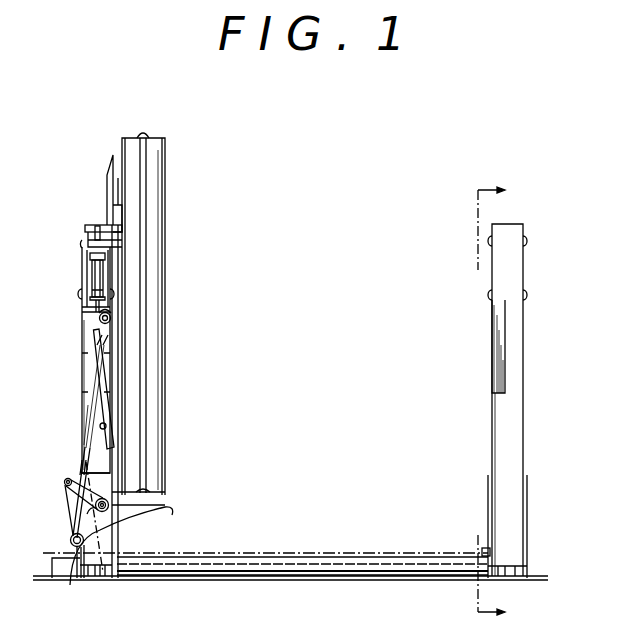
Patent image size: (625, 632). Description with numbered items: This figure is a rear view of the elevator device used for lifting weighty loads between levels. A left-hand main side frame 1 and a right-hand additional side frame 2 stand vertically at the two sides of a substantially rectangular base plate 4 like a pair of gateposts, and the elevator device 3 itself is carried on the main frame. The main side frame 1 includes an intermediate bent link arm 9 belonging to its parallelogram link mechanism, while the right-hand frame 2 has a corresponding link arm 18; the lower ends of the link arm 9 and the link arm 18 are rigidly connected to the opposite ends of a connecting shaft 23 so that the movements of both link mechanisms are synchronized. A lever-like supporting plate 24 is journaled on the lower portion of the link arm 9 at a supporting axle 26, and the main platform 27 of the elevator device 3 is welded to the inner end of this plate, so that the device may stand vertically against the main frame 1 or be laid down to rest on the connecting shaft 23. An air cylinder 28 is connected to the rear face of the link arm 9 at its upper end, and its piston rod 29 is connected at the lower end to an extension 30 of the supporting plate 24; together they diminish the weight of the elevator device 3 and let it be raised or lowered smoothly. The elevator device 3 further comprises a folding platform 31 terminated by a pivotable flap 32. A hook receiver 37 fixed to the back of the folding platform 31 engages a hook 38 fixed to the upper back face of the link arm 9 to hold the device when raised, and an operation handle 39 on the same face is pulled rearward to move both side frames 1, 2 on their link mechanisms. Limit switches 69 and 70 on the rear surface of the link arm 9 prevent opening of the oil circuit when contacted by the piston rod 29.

The main side frame 1 is at (80, 318).
The additional side frame 2 is at (527, 352).
The elevator device 3 is at (168, 285).
The base plate 4 is at (142, 582).
The intermediate bent link arm 9 is at (84, 338).
The link arm 18 is at (522, 383).
The connecting shaft 23 is at (324, 558).
The supporting plate 24 is at (164, 508).
The supporting axle 26 is at (88, 508).
The main platform 27 is at (163, 340).
The air cylinder 28 is at (97, 375).
The piston rod 29 is at (82, 472).
The extension 30 is at (73, 578).
The folding platform 31 is at (147, 188).
The pivotable flap 32 is at (108, 178).
The hook receiver 37 is at (97, 229).
The hook 38 is at (87, 228).
The operation handle 39 is at (94, 276).
The limit switch 69 is at (88, 427).
The limit switch 70 is at (101, 423).